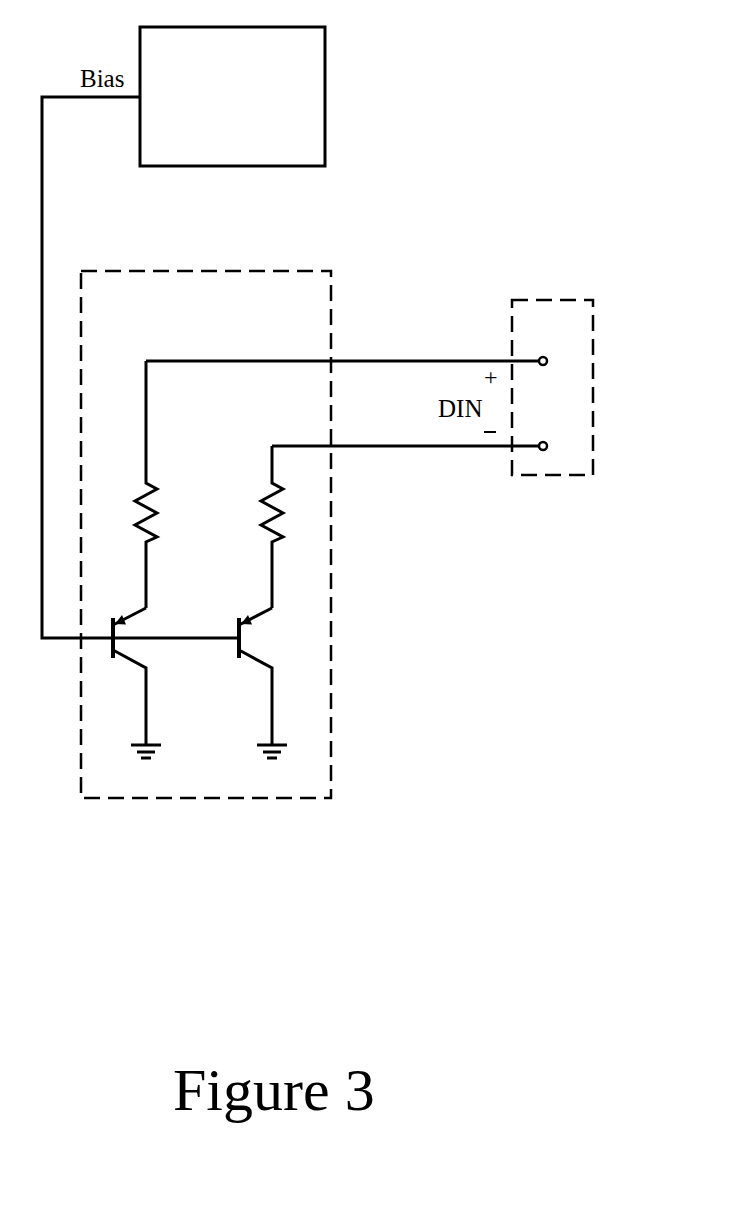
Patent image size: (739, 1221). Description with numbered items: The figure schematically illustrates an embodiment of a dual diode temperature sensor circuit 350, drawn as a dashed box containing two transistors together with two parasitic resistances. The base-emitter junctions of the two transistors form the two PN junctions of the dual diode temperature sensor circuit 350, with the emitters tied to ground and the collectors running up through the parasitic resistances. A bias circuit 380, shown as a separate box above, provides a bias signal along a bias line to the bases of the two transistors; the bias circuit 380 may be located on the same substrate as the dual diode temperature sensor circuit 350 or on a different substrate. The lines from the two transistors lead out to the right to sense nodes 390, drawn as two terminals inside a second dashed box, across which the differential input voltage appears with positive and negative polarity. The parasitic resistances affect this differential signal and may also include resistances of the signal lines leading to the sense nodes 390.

The bias circuit 380 is at (212, 137).
The dual diode temperature sensor circuit 350 is at (273, 310).
The sense nodes 390 is at (563, 300).